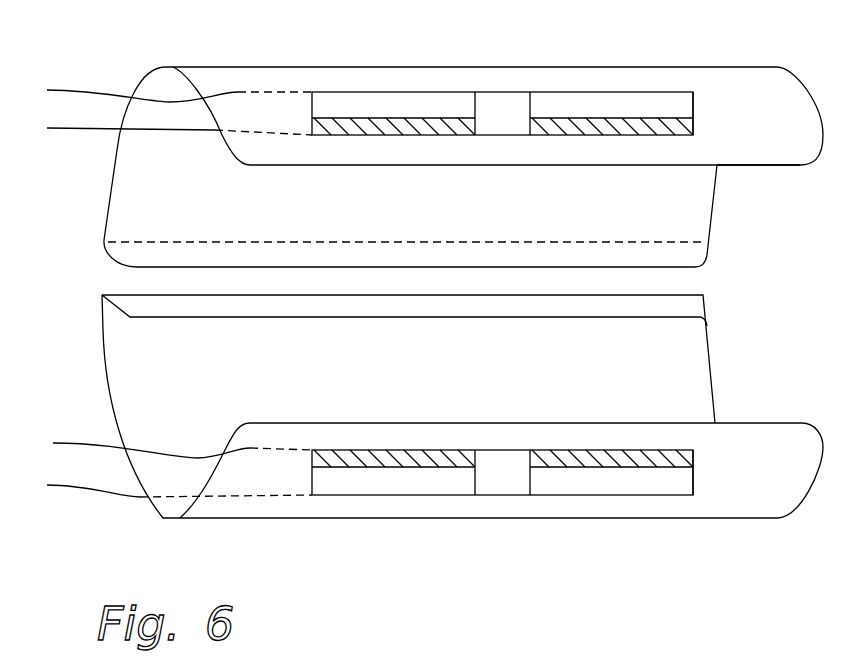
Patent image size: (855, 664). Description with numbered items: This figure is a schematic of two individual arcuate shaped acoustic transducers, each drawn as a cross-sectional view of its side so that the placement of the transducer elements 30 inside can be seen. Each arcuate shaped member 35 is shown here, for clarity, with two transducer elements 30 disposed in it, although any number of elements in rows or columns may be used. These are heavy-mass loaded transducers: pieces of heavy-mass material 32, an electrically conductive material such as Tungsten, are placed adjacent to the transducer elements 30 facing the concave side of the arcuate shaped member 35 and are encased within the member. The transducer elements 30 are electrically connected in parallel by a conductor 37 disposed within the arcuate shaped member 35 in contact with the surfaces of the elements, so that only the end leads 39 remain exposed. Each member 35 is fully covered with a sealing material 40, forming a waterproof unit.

The transducer element 30 is at (377, 108).
The heavy-mass material 32 is at (367, 135).
The arcuate shaped member 35 is at (693, 108).
The conductor 37 is at (500, 90).
The end lead 39 is at (68, 130).
The sealing material 40 is at (243, 73).